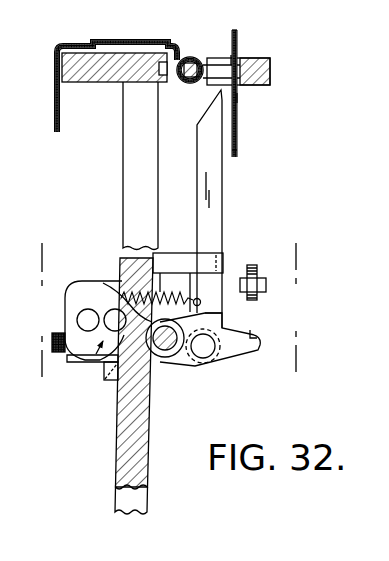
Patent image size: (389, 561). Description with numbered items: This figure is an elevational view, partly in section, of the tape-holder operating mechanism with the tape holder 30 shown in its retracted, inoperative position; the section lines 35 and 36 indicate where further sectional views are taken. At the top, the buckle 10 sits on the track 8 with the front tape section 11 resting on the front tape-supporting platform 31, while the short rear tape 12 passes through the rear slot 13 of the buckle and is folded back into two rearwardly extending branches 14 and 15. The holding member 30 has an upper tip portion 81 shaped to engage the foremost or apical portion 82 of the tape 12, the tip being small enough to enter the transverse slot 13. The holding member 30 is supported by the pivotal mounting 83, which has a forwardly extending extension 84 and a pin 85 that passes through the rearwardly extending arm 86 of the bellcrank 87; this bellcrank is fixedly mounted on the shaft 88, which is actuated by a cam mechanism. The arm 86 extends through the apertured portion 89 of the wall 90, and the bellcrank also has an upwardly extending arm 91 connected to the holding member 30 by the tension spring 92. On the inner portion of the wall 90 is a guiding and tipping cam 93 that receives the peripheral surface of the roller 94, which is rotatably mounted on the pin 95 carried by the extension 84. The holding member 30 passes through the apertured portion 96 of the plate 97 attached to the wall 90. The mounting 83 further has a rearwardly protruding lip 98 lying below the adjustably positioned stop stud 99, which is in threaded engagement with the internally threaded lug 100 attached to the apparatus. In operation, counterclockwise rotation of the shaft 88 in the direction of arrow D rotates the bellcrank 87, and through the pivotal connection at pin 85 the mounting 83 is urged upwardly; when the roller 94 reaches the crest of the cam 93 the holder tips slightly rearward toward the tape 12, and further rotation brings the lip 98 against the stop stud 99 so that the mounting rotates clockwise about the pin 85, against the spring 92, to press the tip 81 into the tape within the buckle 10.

The track 8 is at (271, 72).
The buckle 10 is at (179, 62).
The front tape section 11 is at (117, 44).
The tape 12 is at (240, 40).
The rear slot 13 is at (215, 86).
The branch 14 is at (238, 31).
The branch 15 is at (238, 143).
The tape holder 30 is at (224, 197).
The front tape-supporting platform 31 is at (104, 84).
The section line 35 is at (40, 255).
The section line 36 is at (320, 255).
The upper tip portion 81 is at (238, 97).
The apical portion 82 is at (231, 60).
The pivotal mounting 83 is at (246, 357).
The extension 84 is at (190, 367).
The pin 85 is at (208, 361).
The rearwardly extending arm 86 is at (158, 366).
The bellcrank 87 is at (105, 363).
The shaft 88 is at (77, 320).
The apertured portion 89 is at (108, 390).
The wall 90 is at (124, 183).
The upwardly extending arm 91 is at (96, 282).
The tension spring 92 is at (188, 263).
The guiding and tipping cam 93 is at (117, 316).
The roller 94 is at (216, 314).
The pin 95 is at (218, 334).
The apertured portion 96 is at (196, 251).
The plate 97 is at (158, 252).
The lip 98 is at (255, 336).
The stop stud 99 is at (257, 295).
The internally threaded lug 100 is at (268, 285).